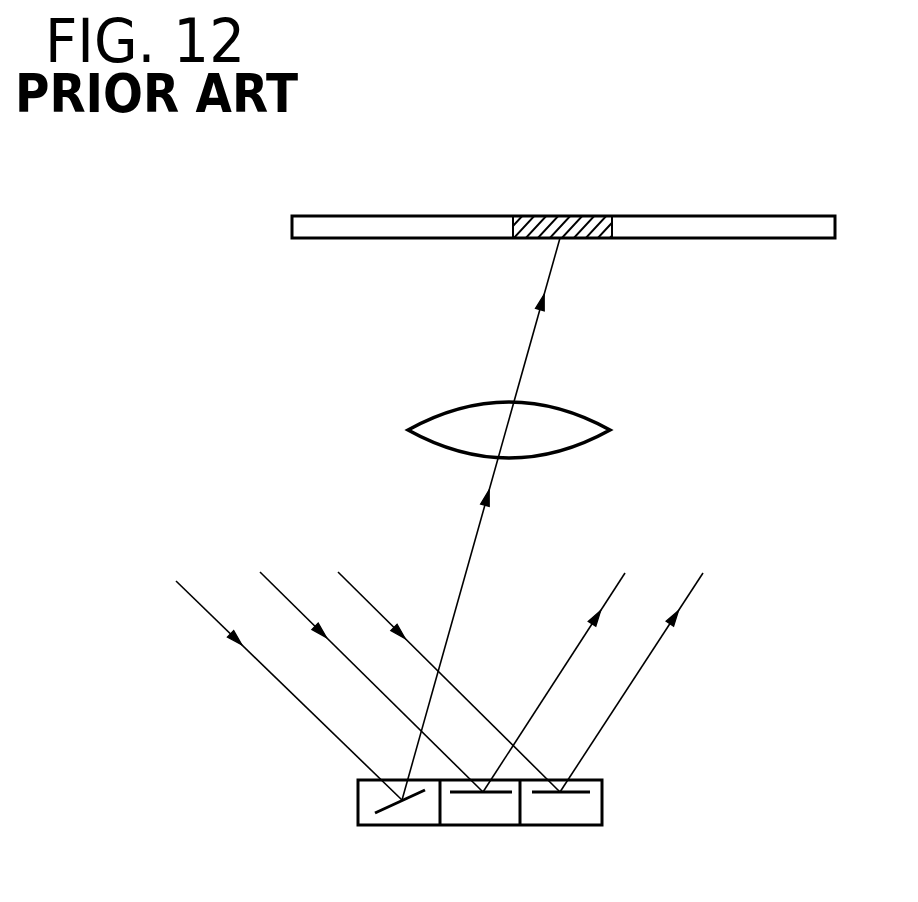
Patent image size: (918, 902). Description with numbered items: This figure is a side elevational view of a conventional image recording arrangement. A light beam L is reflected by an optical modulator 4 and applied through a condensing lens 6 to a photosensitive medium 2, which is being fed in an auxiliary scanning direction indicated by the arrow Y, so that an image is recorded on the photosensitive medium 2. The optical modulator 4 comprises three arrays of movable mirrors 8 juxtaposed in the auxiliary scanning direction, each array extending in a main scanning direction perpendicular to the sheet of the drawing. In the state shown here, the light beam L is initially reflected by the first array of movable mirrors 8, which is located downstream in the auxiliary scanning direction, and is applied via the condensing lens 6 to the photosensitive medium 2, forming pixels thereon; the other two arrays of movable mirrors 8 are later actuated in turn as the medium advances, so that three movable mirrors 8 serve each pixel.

The photosensitive medium 2 is at (340, 215).
The optical modulator 4 is at (498, 826).
The condensing lens 6 is at (570, 425).
The movable mirrors 8 is at (390, 826).
The light beam L is at (470, 565).
The auxiliary scanning direction arrow Y is at (487, 168).